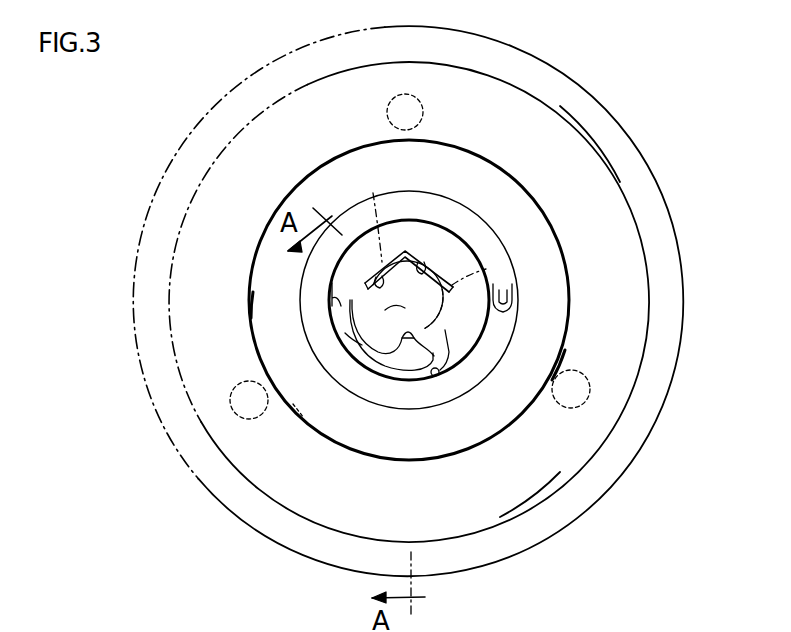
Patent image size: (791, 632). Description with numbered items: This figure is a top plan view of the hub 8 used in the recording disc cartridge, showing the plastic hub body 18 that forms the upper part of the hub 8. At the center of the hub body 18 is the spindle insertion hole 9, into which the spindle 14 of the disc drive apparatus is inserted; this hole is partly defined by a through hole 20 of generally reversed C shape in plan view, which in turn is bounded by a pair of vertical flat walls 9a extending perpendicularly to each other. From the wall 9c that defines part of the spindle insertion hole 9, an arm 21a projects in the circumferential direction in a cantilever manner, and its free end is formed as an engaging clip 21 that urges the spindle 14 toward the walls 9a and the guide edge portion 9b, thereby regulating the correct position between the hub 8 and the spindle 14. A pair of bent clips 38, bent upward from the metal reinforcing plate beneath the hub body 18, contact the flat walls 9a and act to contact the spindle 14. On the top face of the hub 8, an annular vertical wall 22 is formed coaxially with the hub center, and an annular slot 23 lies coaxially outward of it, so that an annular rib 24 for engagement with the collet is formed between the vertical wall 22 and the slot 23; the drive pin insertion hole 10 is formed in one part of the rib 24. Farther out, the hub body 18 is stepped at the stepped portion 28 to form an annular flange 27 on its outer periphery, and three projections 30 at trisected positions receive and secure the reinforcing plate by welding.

The hub 8 is at (160, 188).
The hub body 18 is at (176, 298).
The stepped portion 28 is at (592, 146).
The annular flange 27 is at (537, 532).
The projections 30 is at (387, 108).
The spindle insertion hole 9 is at (350, 367).
The vertical flat walls 9a is at (380, 280).
The guide edge portion 9b is at (560, 362).
The wall 9c is at (246, 313).
The annular rib 24 is at (470, 213).
The annular vertical wall 22 is at (332, 283).
The spindle 14 is at (407, 250).
The bent clips 38 is at (520, 263).
The engaging clip 21 is at (406, 358).
The arm 21a is at (345, 333).
The through hole 20 is at (438, 378).
The drive pin insertion hole 10 is at (505, 300).
The annular slot 23 is at (294, 410).